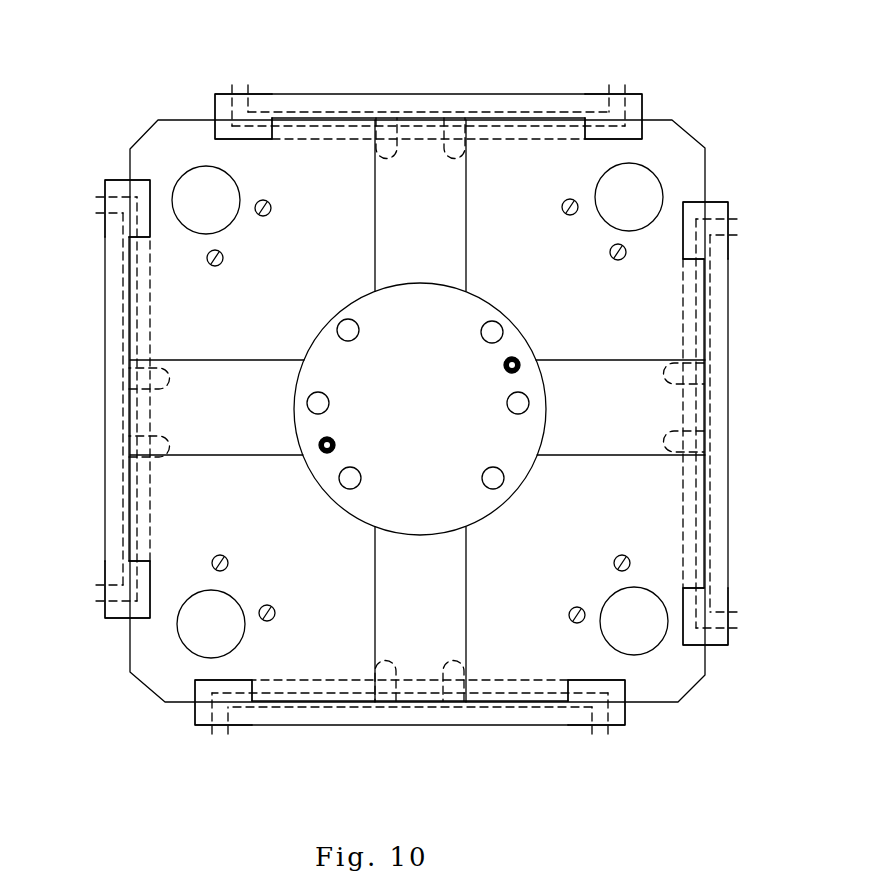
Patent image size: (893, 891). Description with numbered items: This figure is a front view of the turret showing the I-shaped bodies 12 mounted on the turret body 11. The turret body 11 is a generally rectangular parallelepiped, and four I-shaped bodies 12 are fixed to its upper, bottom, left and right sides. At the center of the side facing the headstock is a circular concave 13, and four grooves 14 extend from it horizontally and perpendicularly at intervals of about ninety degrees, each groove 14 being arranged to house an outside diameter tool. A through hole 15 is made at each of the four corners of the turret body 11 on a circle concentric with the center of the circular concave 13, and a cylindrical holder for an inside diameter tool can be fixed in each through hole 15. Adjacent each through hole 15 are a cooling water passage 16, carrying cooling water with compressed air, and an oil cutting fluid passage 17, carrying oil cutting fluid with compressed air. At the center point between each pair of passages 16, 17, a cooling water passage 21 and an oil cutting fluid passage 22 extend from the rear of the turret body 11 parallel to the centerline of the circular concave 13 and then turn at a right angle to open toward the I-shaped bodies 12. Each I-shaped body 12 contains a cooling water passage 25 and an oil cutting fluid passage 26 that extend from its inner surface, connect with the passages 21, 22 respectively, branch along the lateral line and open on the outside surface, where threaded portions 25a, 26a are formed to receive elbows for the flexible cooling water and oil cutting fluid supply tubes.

The turret body 11 is at (668, 127).
The I-shaped body 12 is at (559, 100).
The circular concave 13 is at (478, 296).
The groove 14 is at (396, 222).
The through hole 15 is at (217, 232).
The cooling water passage 16 is at (216, 267).
The oil cutting fluid passage 17 is at (263, 217).
The cooling water passage 21 is at (384, 172).
The oil cutting fluid passage 22 is at (448, 172).
The cooling water passage 25 is at (310, 112).
The threaded portion 25a is at (258, 92).
The oil cutting fluid passage 26 is at (513, 112).
The threaded portion 26a is at (643, 92).